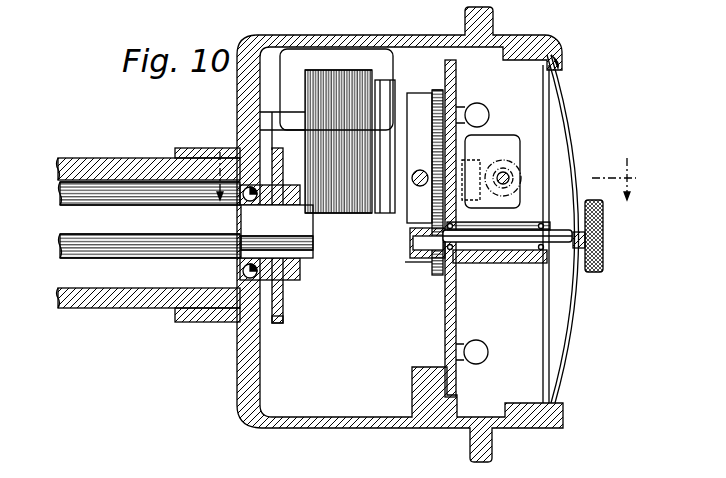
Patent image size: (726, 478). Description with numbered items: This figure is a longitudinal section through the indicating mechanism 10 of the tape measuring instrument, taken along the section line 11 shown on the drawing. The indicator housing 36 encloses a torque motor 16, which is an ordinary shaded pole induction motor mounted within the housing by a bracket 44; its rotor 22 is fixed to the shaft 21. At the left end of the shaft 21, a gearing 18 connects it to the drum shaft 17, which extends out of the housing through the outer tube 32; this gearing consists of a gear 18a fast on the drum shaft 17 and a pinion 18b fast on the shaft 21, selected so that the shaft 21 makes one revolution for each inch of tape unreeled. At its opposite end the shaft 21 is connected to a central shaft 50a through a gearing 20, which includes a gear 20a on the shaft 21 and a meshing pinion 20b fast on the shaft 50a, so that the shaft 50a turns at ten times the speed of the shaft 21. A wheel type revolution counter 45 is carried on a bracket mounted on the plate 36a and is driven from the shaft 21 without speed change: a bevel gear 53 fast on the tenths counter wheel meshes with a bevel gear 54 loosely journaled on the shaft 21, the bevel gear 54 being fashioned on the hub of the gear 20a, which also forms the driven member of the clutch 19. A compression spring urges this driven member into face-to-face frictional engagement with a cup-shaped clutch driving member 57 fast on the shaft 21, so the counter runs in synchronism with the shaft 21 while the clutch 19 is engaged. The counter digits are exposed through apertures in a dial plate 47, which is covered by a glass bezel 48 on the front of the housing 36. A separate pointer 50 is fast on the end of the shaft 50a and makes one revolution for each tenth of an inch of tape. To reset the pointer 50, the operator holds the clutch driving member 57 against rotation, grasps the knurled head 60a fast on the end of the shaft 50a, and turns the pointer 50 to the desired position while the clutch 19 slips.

The indicating mechanism 10 is at (575, 114).
The section line 11 is at (421, 168).
The torque motor 16 is at (346, 221).
The drum shaft 17 is at (134, 249).
The gearing 18 is at (292, 280).
The gear 18a is at (283, 321).
The pinion 18b is at (240, 142).
The clutch 19 is at (408, 265).
The gearing 20 is at (413, 242).
The gear 20a is at (436, 90).
The pinion 20b is at (427, 254).
The shaft 21 is at (398, 164).
The rotor 22 is at (350, 137).
The outer tube 32 is at (116, 308).
The indicator housing 36 is at (325, 36).
The plate 36a is at (445, 322).
The bracket 44 is at (284, 112).
The wheel type revolution counter 45 is at (496, 128).
The dial plate 47 is at (549, 146).
The glass bezel 48 is at (571, 140).
The pointer 50 is at (556, 319).
The central shaft 50a is at (509, 263).
The bevel gear 53 is at (528, 162).
The bevel gear 54 is at (484, 162).
The clutch driving member 57 is at (413, 242).
The knurled head 60a is at (603, 263).